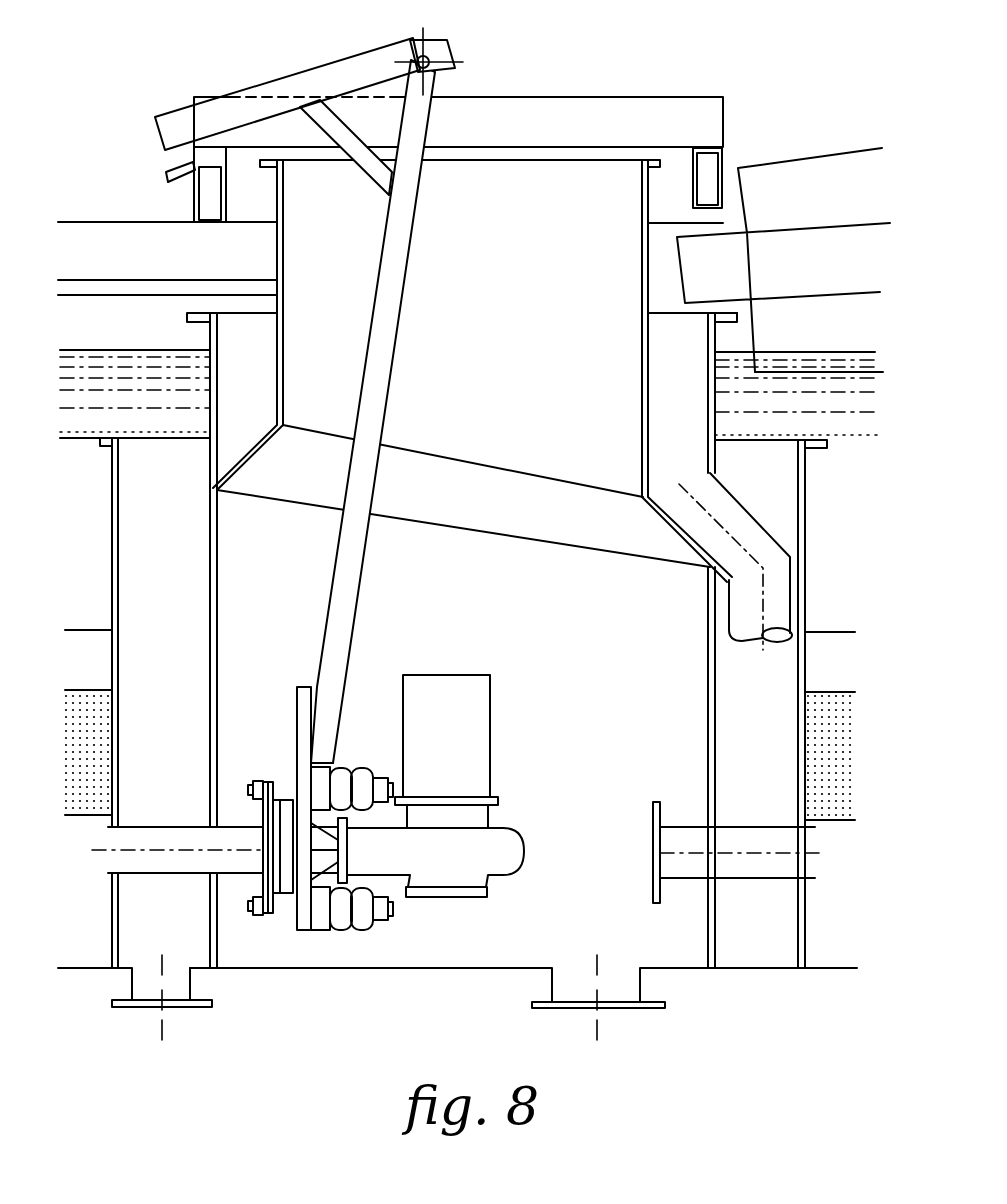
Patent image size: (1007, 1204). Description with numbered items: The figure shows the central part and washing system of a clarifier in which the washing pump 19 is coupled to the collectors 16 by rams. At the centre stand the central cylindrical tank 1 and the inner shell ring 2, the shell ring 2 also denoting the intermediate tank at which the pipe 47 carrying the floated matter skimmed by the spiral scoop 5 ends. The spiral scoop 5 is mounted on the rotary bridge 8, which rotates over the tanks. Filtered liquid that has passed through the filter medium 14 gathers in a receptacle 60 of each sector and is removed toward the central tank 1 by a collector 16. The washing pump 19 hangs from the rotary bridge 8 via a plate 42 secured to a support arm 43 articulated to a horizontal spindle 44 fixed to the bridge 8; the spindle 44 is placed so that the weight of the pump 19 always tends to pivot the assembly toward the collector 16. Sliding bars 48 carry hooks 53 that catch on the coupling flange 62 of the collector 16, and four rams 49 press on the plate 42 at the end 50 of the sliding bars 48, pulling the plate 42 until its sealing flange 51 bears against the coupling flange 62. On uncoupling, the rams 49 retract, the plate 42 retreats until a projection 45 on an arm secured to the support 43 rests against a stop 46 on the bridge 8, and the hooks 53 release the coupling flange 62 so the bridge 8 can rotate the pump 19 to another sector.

The central cylindrical tank 1 is at (207, 569).
The inner shell ring 2 is at (123, 477).
The spiral scoop 5 is at (810, 175).
The rotary bridge 8 is at (237, 143).
The filter medium 14 is at (100, 752).
The collector 16 is at (155, 837).
The washing pump 19 is at (477, 707).
The plate 42 is at (298, 697).
The support arm 43 is at (360, 567).
The horizontal spindle 44 is at (412, 53).
The projection 45 is at (153, 152).
The stop 46 is at (167, 177).
The pipe 47 is at (267, 367).
The sliding bars 48 is at (296, 760).
The rams 49 is at (358, 930).
The end of the sliding bars 50 is at (387, 920).
The sealing flange 51 is at (287, 893).
The hooks 53 is at (250, 893).
The receptacle 60 is at (88, 950).
The coupling flange 62 is at (253, 823).